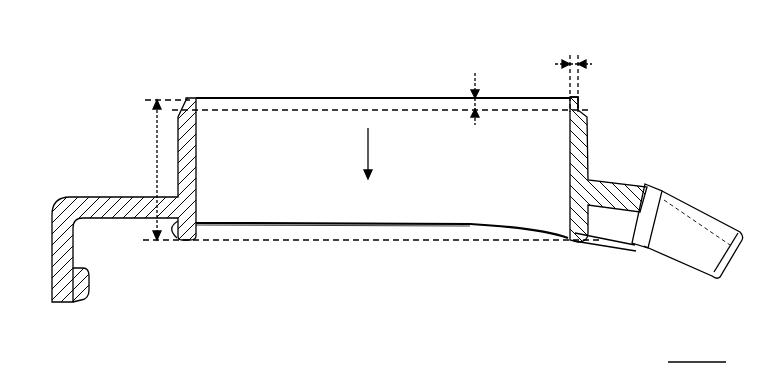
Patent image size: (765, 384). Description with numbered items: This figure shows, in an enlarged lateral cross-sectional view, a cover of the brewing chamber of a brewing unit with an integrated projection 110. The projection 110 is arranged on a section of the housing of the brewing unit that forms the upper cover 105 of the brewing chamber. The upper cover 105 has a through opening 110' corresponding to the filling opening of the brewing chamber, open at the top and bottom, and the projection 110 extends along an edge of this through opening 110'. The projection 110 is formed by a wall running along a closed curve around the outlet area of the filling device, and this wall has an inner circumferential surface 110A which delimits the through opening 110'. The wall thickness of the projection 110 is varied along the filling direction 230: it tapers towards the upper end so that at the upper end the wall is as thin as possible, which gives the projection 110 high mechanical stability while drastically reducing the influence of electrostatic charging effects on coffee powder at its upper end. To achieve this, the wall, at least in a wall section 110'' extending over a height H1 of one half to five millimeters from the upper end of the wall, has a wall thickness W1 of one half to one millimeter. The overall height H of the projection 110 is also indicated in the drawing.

The upper cover 105 is at (366, 25).
The projection 110 is at (656, 173).
The through opening 110' is at (371, 217).
The wall section 110'' is at (608, 81).
The inner circumferential surface 110A is at (197, 157).
The filling direction 230 is at (370, 166).
The height dimension H is at (152, 170).
The height H1 is at (477, 100).
The wall thickness W1 is at (573, 70).